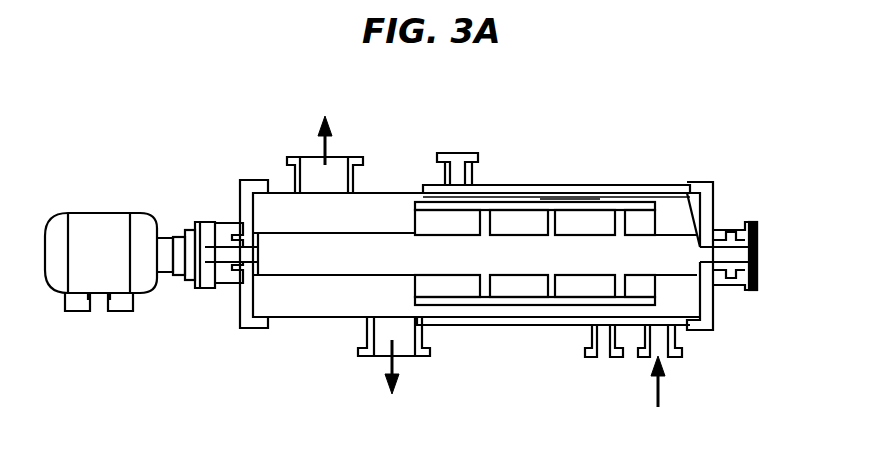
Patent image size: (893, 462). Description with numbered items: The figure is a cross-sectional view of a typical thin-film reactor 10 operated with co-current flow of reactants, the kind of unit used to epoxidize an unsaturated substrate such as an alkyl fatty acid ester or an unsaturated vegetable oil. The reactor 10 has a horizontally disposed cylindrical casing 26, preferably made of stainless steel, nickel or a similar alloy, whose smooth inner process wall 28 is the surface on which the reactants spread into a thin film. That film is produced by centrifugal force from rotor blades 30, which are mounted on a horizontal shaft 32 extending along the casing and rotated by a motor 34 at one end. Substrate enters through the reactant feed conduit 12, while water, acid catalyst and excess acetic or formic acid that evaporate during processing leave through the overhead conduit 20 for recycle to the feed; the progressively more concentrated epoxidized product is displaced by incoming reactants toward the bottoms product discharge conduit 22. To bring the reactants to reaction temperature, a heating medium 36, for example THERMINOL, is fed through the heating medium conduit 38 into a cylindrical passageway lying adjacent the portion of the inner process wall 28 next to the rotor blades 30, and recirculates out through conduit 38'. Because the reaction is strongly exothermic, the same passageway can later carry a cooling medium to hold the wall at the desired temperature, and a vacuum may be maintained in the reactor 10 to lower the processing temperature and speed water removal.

The thin-film reactor 10 is at (590, 132).
The reactant feed conduit 12 is at (676, 340).
The overhead conduit 20 is at (292, 178).
The bottoms product discharge conduit 22 is at (390, 333).
The cylindrical casing 26 is at (636, 190).
The inner process wall 28 is at (566, 199).
The rotor blades 30 is at (423, 297).
The horizontal shaft 32 is at (534, 266).
The motor 34 is at (93, 218).
The heating medium 36 is at (508, 198).
The heating medium conduit 38 is at (580, 356).
The heating medium recirculation conduit 38' is at (469, 148).